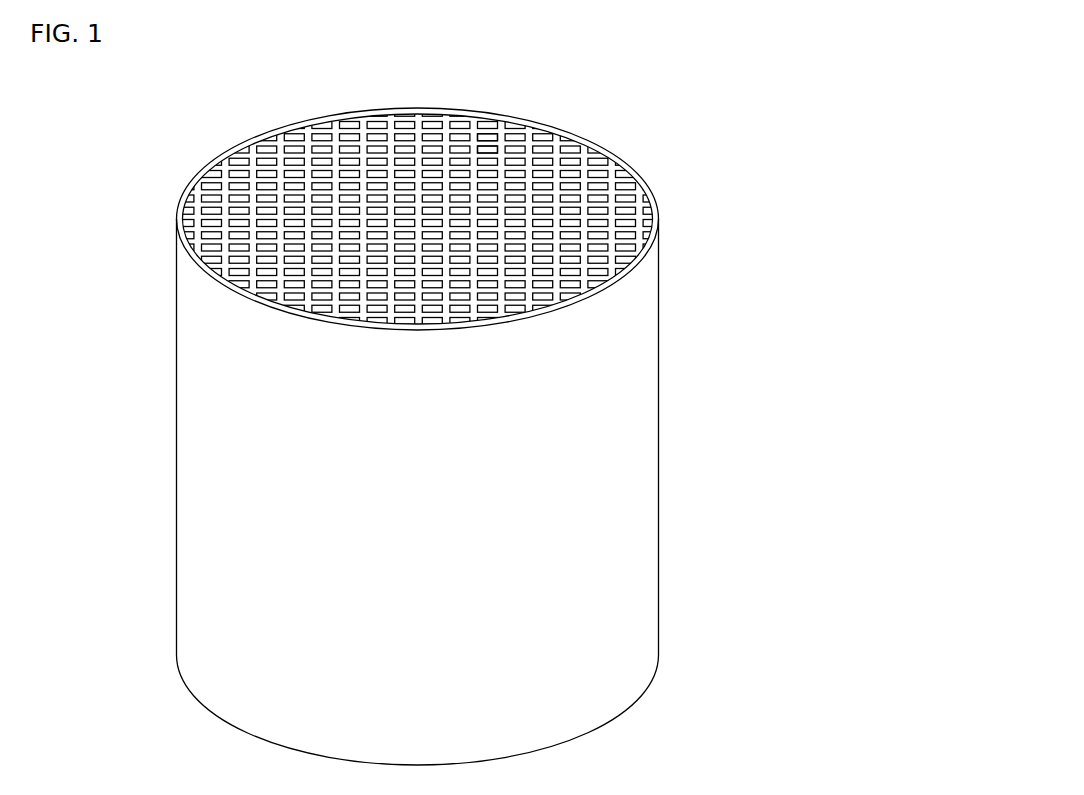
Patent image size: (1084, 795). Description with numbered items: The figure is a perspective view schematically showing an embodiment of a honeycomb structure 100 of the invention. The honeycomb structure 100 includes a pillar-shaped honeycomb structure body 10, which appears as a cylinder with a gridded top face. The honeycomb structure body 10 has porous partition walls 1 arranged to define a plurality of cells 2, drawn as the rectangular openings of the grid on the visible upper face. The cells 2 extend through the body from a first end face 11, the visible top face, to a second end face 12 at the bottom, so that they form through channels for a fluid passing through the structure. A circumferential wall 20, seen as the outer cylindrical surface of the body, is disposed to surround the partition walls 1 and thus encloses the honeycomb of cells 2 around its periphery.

The honeycomb structure 100 is at (709, 82).
The honeycomb structure body 10 is at (640, 337).
The first end face 11 is at (283, 127).
The second end face 12 is at (565, 743).
The circumferential wall 20 is at (610, 487).
The partition walls 1 is at (393, 143).
The cells 2 is at (485, 136).